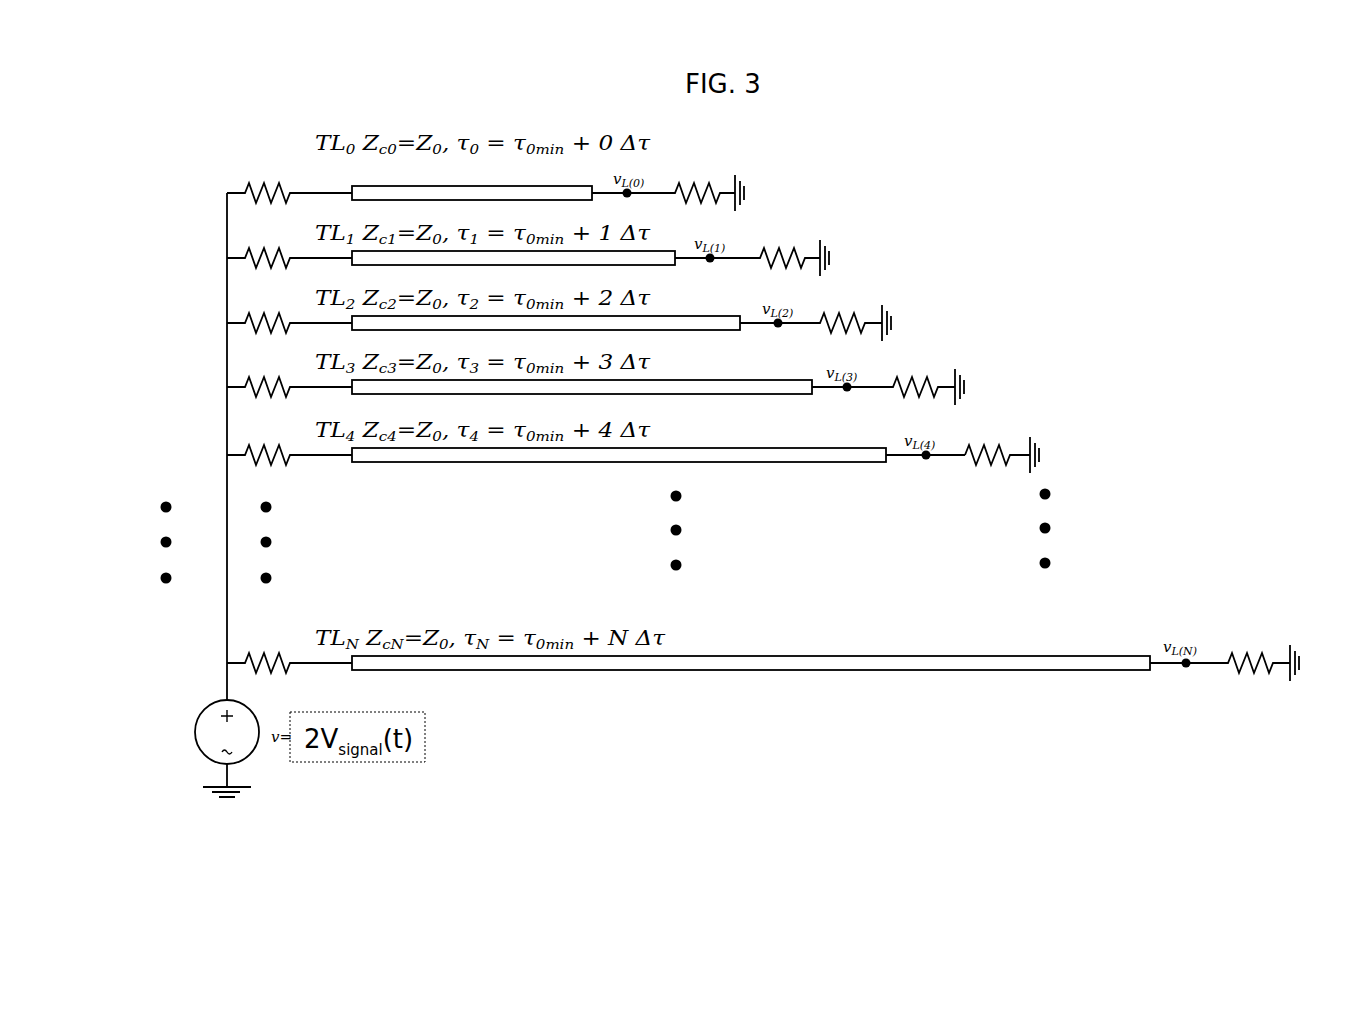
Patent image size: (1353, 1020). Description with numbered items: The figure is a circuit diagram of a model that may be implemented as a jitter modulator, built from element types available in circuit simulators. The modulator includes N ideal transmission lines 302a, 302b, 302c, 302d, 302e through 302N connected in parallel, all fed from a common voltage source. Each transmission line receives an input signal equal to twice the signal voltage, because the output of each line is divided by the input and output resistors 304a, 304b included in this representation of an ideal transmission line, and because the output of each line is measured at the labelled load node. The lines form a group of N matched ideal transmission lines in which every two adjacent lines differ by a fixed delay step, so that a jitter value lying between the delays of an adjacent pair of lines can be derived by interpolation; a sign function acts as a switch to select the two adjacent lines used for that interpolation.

The ideal transmission line 302a is at (358, 187).
The ideal transmission line 302b is at (638, 258).
The ideal transmission line 302c is at (660, 330).
The ideal transmission line 302d is at (683, 392).
The ideal transmission line 302e is at (757, 462).
The ideal transmission line 302N is at (757, 675).
The input resistor 304a is at (265, 440).
The output resistor 304b is at (992, 440).